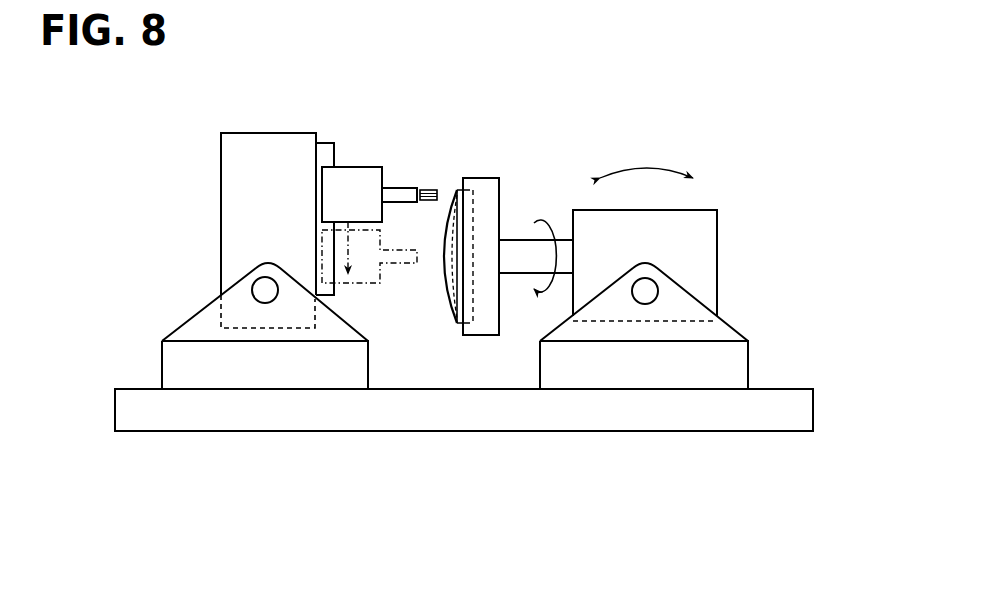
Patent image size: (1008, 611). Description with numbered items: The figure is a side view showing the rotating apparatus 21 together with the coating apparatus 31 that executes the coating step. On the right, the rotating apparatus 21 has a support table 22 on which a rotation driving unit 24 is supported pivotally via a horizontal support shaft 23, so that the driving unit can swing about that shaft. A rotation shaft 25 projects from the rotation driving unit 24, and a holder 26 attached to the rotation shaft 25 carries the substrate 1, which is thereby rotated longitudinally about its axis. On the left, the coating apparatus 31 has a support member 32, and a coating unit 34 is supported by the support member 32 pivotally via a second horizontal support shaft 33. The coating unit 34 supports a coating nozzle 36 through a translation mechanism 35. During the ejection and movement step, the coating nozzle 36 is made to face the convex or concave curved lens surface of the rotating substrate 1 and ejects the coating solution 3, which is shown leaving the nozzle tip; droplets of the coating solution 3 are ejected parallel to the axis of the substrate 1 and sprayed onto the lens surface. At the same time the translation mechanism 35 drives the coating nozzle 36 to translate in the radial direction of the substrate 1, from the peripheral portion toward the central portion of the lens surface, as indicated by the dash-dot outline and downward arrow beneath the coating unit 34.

The substrate 1 is at (457, 189).
The coating solution 3 is at (425, 189).
The rotating apparatus 21 is at (765, 151).
The support table 22 is at (748, 361).
The horizontal support shaft 23 is at (648, 290).
The rotation driving unit 24 is at (717, 235).
The rotation shaft 25 is at (510, 240).
The holder 26 is at (482, 178).
The coating apparatus 31 is at (204, 137).
The support member 32 is at (162, 362).
The horizontal support shaft 33 is at (263, 290).
The coating unit 34 is at (221, 165).
The translation mechanism 35 is at (328, 143).
The coating nozzle 36 is at (402, 187).